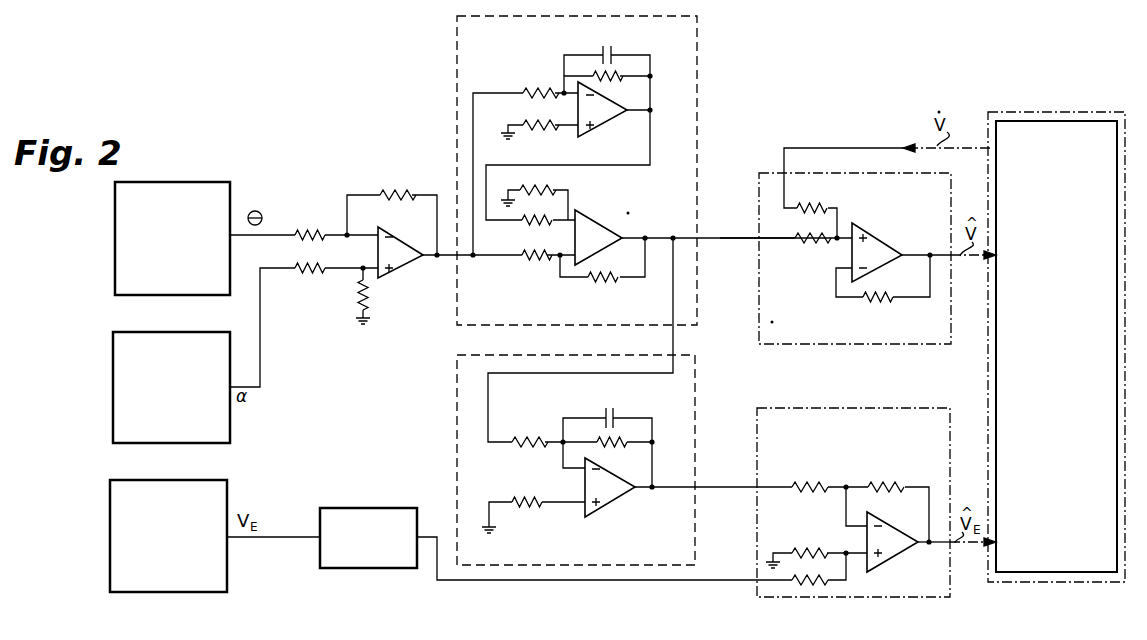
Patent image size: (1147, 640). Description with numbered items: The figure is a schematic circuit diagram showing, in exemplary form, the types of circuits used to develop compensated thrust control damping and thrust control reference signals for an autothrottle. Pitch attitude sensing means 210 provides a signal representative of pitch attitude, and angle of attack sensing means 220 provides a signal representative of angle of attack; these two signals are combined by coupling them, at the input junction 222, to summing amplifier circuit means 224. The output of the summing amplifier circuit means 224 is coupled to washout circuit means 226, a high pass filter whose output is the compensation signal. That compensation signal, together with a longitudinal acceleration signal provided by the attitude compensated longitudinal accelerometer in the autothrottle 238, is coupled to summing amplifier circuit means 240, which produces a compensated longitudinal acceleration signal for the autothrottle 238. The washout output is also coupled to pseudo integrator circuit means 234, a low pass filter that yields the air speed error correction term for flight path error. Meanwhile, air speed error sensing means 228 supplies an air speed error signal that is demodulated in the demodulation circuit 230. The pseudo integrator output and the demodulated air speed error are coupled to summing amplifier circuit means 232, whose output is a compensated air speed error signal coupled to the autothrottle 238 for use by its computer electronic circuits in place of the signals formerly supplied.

The pitch attitude sensing means 210 is at (230, 182).
The angle of attack sensing means 220 is at (243, 322).
The summing junction 222 is at (347, 235).
The summing amplifier circuit means 224 is at (428, 224).
The washout circuit means 226 is at (457, 98).
The air speed error sensing means 228 is at (227, 480).
The demodulation circuit 230 is at (388, 496).
The summing amplifier circuit means 232 is at (805, 408).
The pseudo integrator circuit means 234 is at (722, 405).
The autothrottle 238 is at (1075, 300).
The summing amplifier circuit means 240 is at (767, 172).